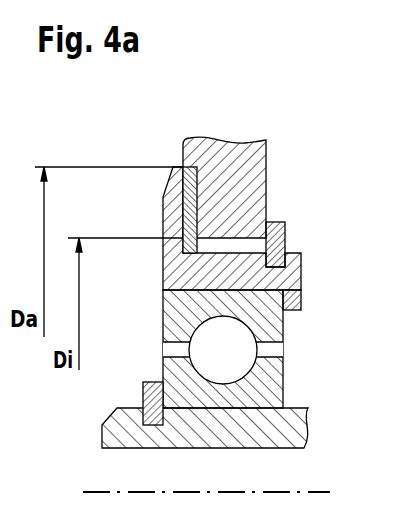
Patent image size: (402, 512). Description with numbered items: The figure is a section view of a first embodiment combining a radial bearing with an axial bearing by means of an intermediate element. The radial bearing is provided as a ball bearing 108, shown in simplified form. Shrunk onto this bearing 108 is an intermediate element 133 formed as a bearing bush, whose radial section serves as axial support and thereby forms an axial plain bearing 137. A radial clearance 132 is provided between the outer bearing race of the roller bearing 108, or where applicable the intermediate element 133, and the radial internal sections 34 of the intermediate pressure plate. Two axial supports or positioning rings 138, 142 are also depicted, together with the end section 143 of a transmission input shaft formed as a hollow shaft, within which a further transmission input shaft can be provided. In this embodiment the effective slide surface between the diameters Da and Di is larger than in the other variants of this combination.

The radial internal section 34 is at (255, 178).
The ball bearing 108 is at (270, 378).
The radial clearance 132 is at (253, 248).
The intermediate element 133 is at (270, 292).
The axial plain bearing 137 is at (186, 170).
The positioning ring 138 is at (286, 227).
The positioning ring 142 is at (143, 397).
The end section of transmission input shaft 143 is at (303, 418).